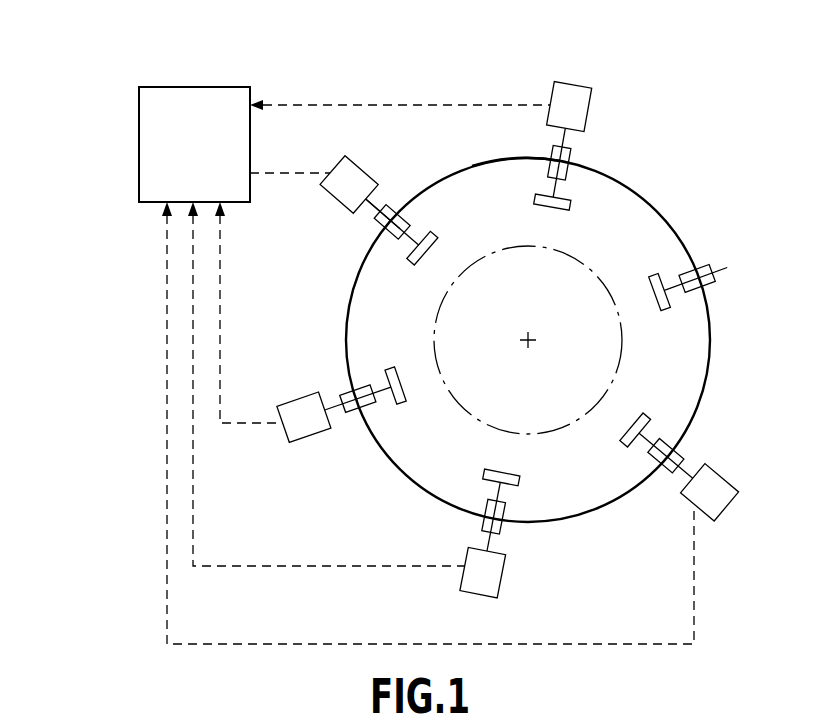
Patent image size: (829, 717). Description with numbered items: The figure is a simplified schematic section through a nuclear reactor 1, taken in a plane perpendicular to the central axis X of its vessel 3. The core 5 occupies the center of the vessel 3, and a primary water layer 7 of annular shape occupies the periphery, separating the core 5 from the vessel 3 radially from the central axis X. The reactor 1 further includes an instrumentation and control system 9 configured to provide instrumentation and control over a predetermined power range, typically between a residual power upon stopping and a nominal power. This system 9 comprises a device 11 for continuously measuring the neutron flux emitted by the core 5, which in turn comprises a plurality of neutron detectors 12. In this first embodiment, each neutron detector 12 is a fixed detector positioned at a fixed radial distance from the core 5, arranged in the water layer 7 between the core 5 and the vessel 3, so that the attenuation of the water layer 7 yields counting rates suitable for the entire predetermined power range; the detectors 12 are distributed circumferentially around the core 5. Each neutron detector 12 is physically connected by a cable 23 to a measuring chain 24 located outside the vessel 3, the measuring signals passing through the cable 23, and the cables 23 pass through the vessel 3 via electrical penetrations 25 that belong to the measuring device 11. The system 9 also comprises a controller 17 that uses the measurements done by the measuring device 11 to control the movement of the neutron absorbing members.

The nuclear reactor 1 is at (100, 48).
The vessel 3 is at (668, 217).
The core 5 is at (616, 309).
The primary water layer 7 is at (508, 168).
The instrumentation and control system 9 is at (90, 150).
The device for continuously measuring the neutron flux 11 is at (348, 140).
The neutron detector 12 is at (413, 266).
The controller 17 is at (139, 180).
The cable 23 is at (375, 197).
The measuring chain 24 is at (578, 86).
The electrical penetration 25 is at (573, 157).
The central axis X is at (525, 343).